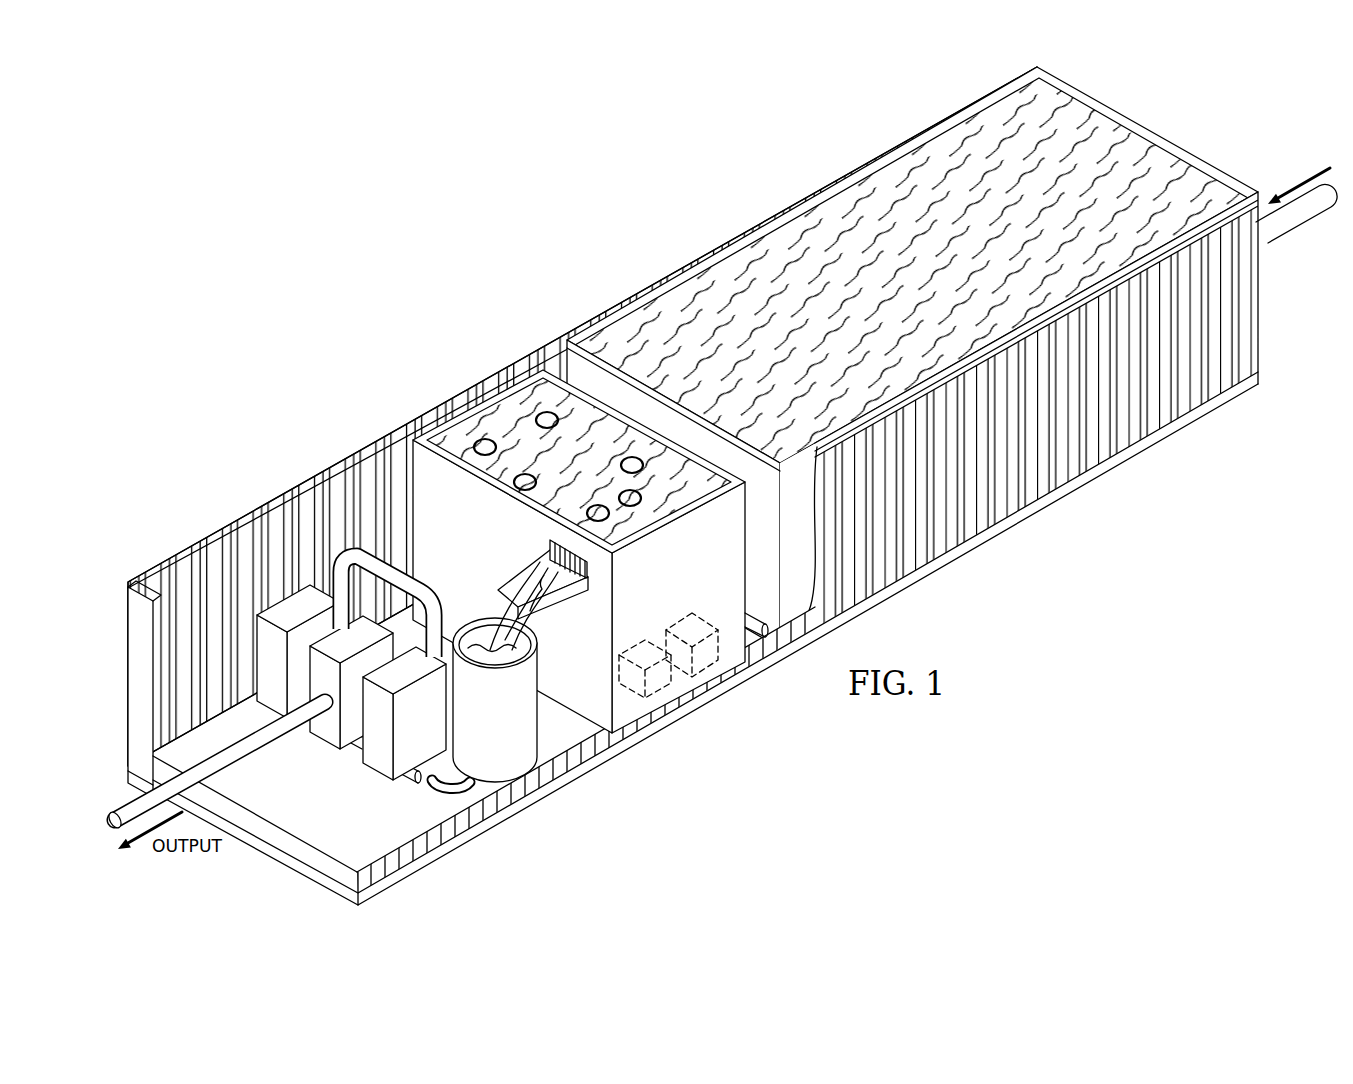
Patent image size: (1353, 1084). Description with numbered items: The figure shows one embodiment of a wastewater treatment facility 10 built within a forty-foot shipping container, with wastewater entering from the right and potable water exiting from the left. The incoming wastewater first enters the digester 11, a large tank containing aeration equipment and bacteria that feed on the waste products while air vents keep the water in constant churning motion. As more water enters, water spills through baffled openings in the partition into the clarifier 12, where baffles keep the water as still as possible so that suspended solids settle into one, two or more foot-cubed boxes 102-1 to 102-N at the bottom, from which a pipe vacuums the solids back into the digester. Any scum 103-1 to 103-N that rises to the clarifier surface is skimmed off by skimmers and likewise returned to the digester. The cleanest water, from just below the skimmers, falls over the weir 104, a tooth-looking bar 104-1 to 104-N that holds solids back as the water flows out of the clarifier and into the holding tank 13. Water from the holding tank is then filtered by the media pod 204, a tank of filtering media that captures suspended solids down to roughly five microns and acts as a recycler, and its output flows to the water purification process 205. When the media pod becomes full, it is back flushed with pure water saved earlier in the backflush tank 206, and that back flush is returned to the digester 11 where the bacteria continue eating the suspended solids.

The wastewater treatment facility 10 is at (732, 486).
The digester 11 is at (912, 357).
The clarifier 12 is at (580, 494).
The holding tank 13 is at (537, 752).
The box 102-1 is at (637, 638).
The box 102-N is at (683, 613).
The scum 103-1 is at (482, 438).
The scum 103-N is at (543, 412).
The weir 104 is at (524, 584).
The tooth of weir bar 104-1 is at (548, 553).
The tooth of weir bar 104-N is at (590, 572).
The media pod 204 is at (400, 775).
The water purification process 205 is at (312, 728).
The backflush tank 206 is at (310, 603).